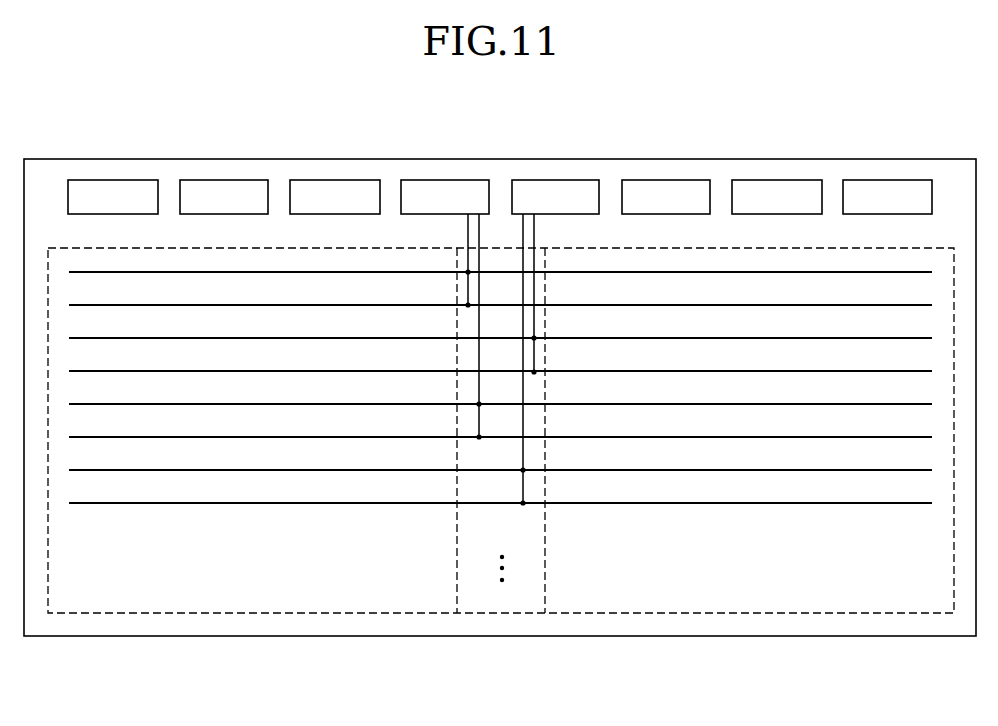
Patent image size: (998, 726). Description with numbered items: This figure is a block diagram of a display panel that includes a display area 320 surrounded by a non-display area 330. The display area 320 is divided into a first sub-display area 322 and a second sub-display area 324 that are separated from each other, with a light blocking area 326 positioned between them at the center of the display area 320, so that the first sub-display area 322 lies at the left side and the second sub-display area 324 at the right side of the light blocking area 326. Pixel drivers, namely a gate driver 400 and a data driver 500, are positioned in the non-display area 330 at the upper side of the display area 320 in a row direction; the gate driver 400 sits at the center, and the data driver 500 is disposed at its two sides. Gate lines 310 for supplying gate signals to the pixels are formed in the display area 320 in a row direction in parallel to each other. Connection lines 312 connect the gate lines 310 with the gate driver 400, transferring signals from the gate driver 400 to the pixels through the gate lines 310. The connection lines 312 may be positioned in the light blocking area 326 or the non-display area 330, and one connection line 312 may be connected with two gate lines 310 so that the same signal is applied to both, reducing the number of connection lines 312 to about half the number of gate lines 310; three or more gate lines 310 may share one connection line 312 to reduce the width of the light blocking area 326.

The gate lines 310 is at (353, 271).
The connection lines 312 is at (468, 232).
The display area 320 is at (320, 684).
The first sub-display area 322 is at (340, 613).
The second sub-display area 324 is at (668, 613).
The light blocking area 326 is at (502, 613).
The non-display area 330 is at (830, 636).
The gate driver 400 is at (534, 180).
The data driver 500 is at (310, 180).